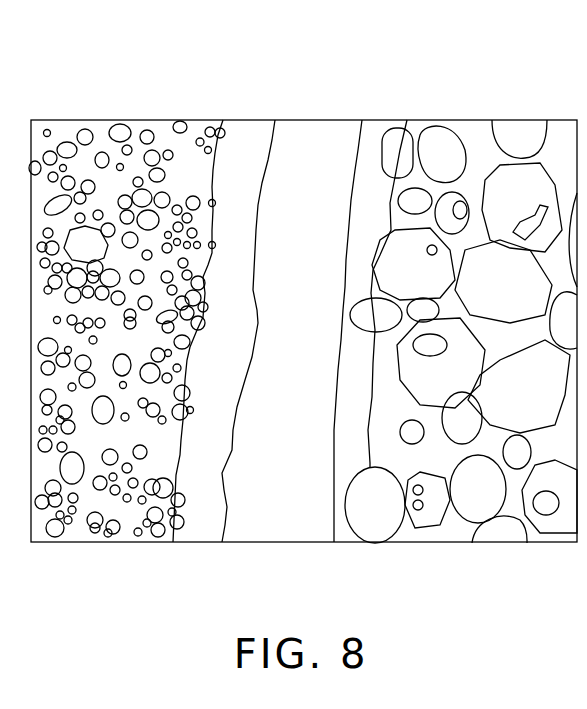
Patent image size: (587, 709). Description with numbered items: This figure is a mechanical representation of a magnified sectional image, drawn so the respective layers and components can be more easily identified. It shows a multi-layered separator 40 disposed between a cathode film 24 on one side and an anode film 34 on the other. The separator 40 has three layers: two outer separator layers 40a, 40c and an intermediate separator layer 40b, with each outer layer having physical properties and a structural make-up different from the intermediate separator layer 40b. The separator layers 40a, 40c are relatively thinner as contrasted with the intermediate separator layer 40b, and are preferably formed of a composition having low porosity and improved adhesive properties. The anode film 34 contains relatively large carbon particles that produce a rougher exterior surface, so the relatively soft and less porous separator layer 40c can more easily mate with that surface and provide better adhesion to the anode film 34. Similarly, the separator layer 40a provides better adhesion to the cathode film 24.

The cathode film 24 is at (100, 133).
The anode film 34 is at (477, 140).
The multi-layered separator 40 is at (223, 110).
The separator layer 40a is at (202, 523).
The intermediate separator layer 40b is at (278, 518).
The separator layer 40c is at (343, 527).